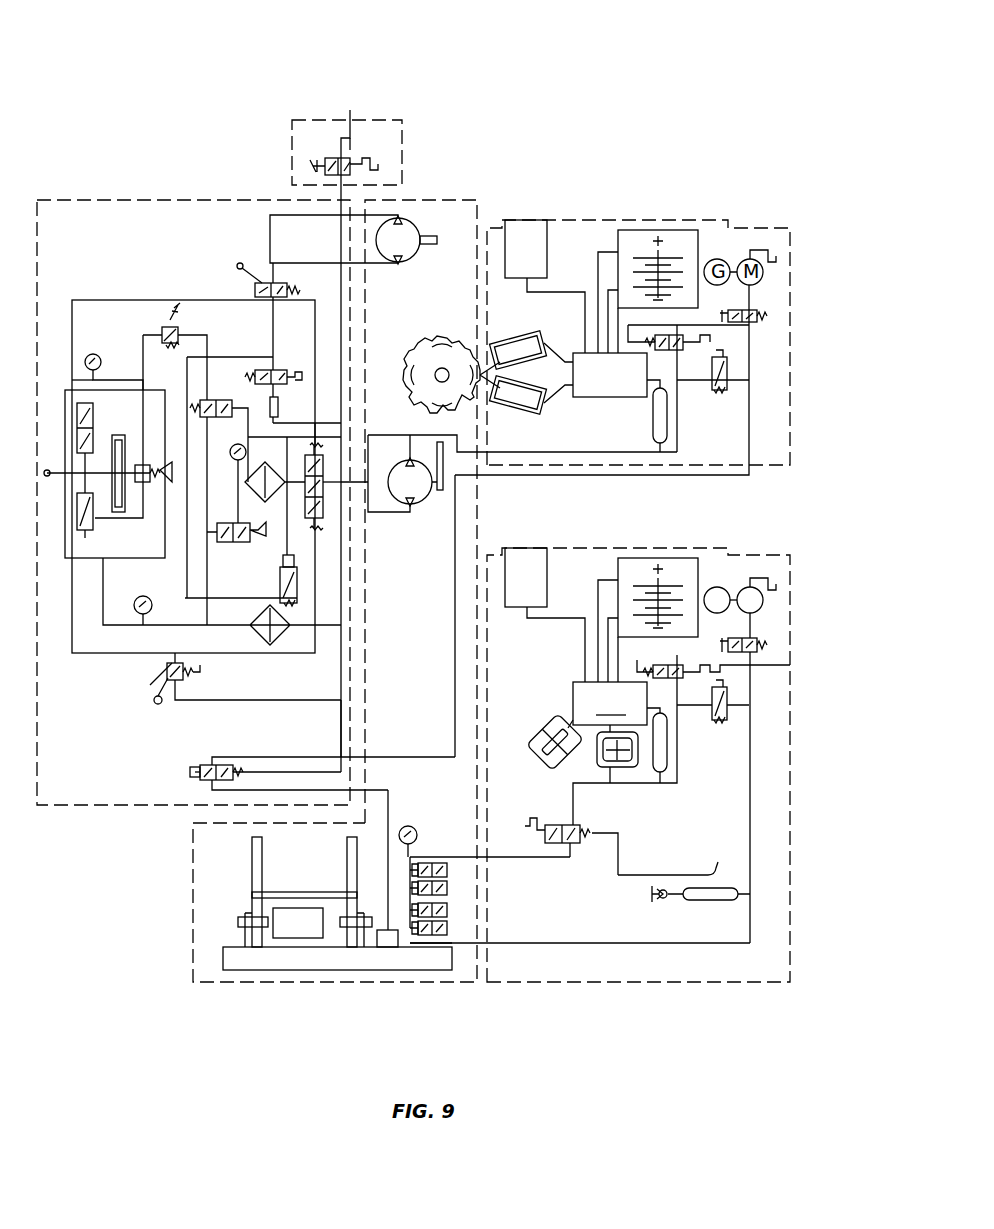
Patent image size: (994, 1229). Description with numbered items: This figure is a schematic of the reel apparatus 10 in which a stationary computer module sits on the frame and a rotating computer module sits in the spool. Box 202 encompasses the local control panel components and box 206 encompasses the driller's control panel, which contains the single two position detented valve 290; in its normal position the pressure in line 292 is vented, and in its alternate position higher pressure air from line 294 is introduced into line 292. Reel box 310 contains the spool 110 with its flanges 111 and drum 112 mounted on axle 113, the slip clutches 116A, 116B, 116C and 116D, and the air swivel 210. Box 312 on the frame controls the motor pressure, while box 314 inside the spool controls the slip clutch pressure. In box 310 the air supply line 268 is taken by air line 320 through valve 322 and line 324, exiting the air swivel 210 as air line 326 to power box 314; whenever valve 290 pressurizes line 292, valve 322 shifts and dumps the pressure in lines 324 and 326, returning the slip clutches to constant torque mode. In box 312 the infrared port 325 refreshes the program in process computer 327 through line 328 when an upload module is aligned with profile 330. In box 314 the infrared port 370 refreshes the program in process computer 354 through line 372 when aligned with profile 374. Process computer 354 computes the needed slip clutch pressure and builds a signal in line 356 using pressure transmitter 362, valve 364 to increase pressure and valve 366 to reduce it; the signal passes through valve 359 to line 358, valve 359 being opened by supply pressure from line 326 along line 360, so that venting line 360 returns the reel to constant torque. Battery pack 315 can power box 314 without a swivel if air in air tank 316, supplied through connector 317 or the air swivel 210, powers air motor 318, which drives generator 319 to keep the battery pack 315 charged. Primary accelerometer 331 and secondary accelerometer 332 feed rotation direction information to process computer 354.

The reel apparatus 10 is at (668, 55).
The box of local control panel components 202 is at (71, 200).
The box of driller's control panel components 206 is at (385, 120).
The valve 290 is at (322, 158).
The line 294 is at (350, 138).
The line 292 is at (341, 729).
The air line 320 is at (253, 757).
The valve 322 is at (195, 777).
The line 324 is at (398, 804).
The reel box 310 is at (470, 200).
The air supply line 268 is at (455, 506).
The infrared port 325 is at (527, 220).
The box 312 is at (662, 220).
The line 328 is at (585, 290).
The process computer 327 is at (596, 398).
The profile 330 is at (737, 220).
The infrared port 370 is at (528, 548).
The line 372 is at (583, 618).
The battery pack 315 is at (631, 558).
The generator 319 is at (722, 588).
The profile 374 is at (740, 548).
The air motor 318 is at (762, 586).
The box 314 is at (790, 600).
The process computer 354 is at (610, 703).
The valve 366 is at (790, 665).
The valve 364 is at (749, 705).
The pressure transmitter 362 is at (672, 736).
The line 356 is at (680, 783).
The primary accelerometer 331 is at (610, 783).
The secondary accelerometer 332 is at (542, 758).
The valve 359 is at (620, 833).
The line 358 is at (572, 857).
The line 360 is at (580, 891).
The air tank 316 is at (738, 902).
The connector 317 is at (660, 898).
The slip clutch 116A is at (447, 870).
The slip clutch 116B is at (447, 888).
The slip clutch 116C is at (447, 910).
The slip clutch 116D is at (447, 928).
The spool 110 is at (252, 897).
The flanges 111 is at (262, 846).
The drum 112 is at (330, 892).
The axle 113 is at (243, 970).
The air swivel 210 is at (385, 947).
The air line 326 is at (462, 950).